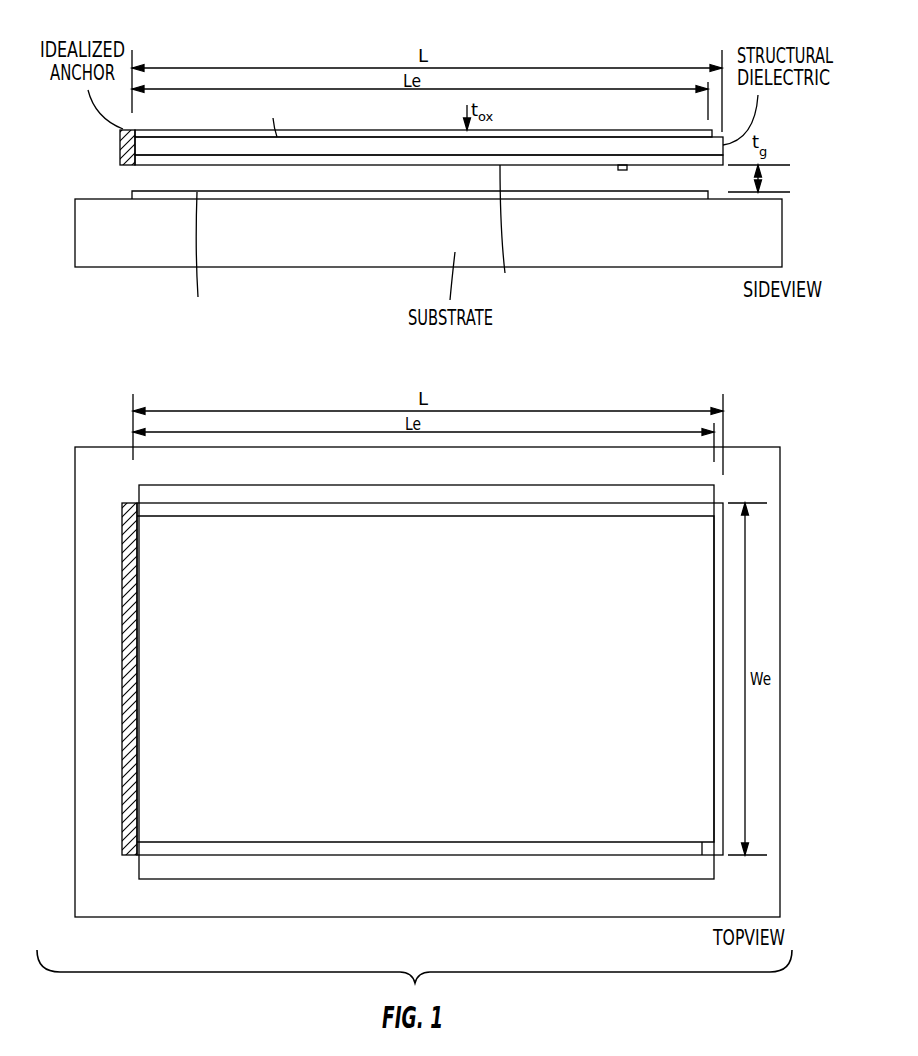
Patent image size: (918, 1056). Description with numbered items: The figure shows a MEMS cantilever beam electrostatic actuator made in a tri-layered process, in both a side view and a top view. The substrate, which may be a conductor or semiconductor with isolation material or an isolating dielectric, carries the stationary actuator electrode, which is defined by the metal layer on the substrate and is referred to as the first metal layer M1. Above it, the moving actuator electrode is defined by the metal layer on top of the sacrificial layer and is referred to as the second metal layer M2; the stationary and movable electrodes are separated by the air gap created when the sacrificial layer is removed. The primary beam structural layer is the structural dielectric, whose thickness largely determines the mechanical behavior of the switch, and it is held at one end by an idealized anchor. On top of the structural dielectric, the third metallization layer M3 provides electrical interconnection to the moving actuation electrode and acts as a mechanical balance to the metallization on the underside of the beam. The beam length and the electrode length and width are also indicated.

The Metal 1 M1 is at (333, 192).
The Metal 2 M2 is at (423, 160).
The Metal 3 M3 is at (338, 135).